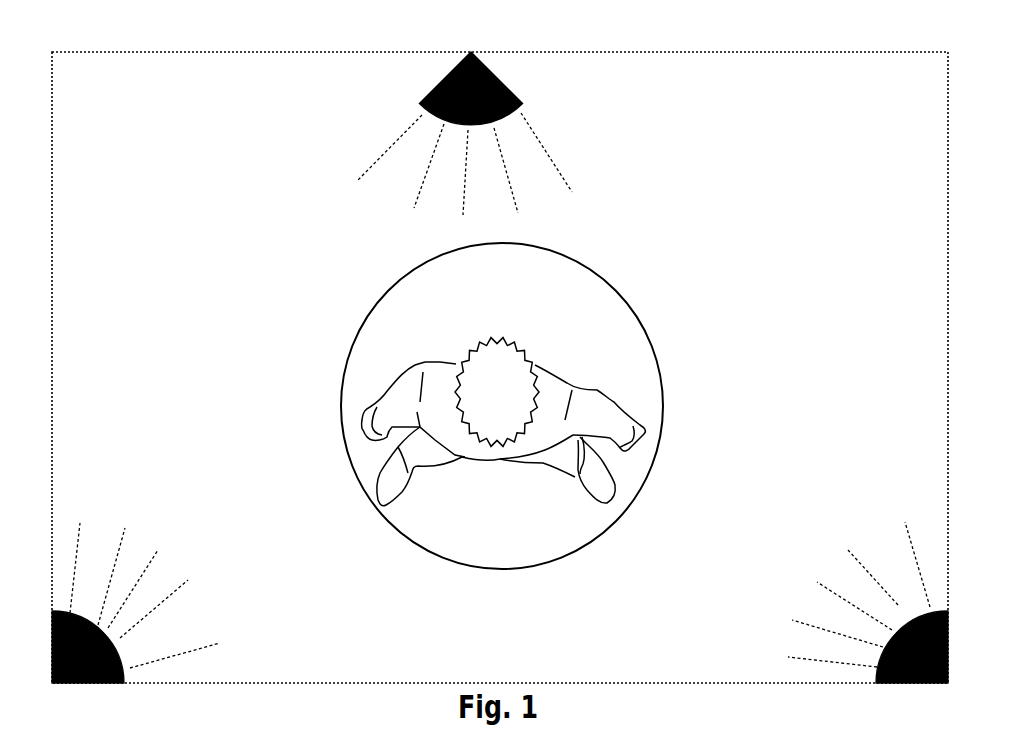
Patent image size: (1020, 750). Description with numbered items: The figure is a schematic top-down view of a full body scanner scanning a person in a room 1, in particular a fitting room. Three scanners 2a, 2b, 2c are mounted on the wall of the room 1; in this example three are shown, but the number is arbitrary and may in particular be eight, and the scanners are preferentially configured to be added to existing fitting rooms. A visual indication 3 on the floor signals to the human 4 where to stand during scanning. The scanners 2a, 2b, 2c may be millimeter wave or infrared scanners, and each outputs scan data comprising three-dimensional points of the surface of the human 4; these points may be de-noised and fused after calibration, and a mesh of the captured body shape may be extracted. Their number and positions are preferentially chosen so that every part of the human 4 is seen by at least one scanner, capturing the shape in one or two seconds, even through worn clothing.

The room 1 is at (500, 347).
The scanner 2a is at (169, 603).
The scanner 2b is at (840, 572).
The scanner 2c is at (500, 133).
The visual indication 3 is at (524, 406).
The human 4 is at (504, 392).